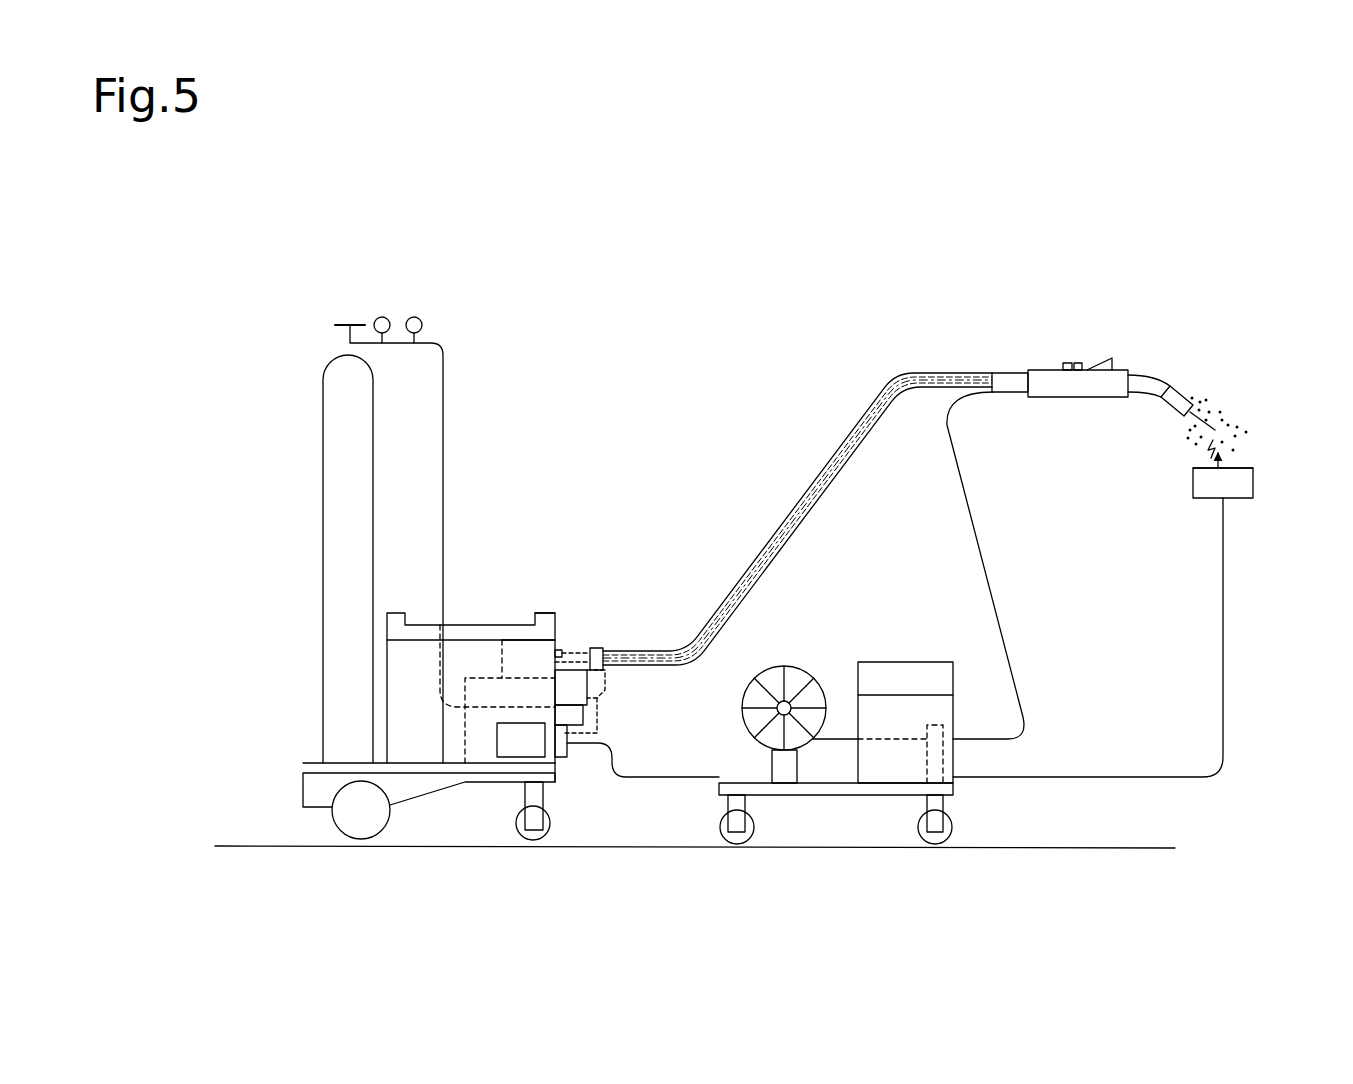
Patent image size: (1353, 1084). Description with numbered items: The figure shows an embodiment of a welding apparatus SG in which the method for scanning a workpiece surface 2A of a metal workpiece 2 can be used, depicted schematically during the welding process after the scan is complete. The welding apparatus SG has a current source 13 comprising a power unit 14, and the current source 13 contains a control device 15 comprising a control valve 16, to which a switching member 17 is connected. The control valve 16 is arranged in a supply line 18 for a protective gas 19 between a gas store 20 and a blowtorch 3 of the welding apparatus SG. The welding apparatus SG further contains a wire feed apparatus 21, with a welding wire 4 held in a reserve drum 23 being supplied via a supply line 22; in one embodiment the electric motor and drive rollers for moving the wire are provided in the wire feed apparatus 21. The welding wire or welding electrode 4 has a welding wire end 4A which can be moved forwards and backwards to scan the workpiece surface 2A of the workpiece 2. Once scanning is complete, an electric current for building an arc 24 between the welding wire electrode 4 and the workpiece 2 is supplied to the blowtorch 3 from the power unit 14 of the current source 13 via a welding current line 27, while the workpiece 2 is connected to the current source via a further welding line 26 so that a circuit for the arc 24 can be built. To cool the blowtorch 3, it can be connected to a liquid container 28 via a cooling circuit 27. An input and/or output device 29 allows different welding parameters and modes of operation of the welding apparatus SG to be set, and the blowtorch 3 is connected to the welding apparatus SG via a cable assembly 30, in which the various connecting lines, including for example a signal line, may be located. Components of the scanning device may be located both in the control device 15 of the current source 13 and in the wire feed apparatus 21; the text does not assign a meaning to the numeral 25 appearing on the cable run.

The welding apparatus SG is at (287, 313).
The gas store 20 is at (345, 430).
The current source 13 is at (513, 513).
The power unit 14 is at (515, 745).
The control device 15 is at (463, 735).
The control valve 16 is at (583, 733).
The switching member 17 is at (570, 775).
The liquid container 28 is at (520, 657).
The input and/or output device 29 is at (548, 615).
The cable assembly 30 is at (600, 648).
The conduit cable 25 is at (870, 427).
The welding current line 27 is at (740, 590).
The supply line 18 is at (932, 390).
The blowtorch 3 is at (1122, 343).
The protective gas 19 is at (1193, 385).
The welding wire 4 is at (1207, 418).
The welding wire end 4A is at (1215, 428).
The arc 24 is at (1195, 455).
The workpiece surface 2A is at (1245, 465).
The workpiece 2 is at (1232, 484).
The supply line 22 is at (990, 590).
The further welding line 26 is at (1223, 657).
The wire feed apparatus 21 is at (998, 815).
The reserve drum 23 is at (788, 680).